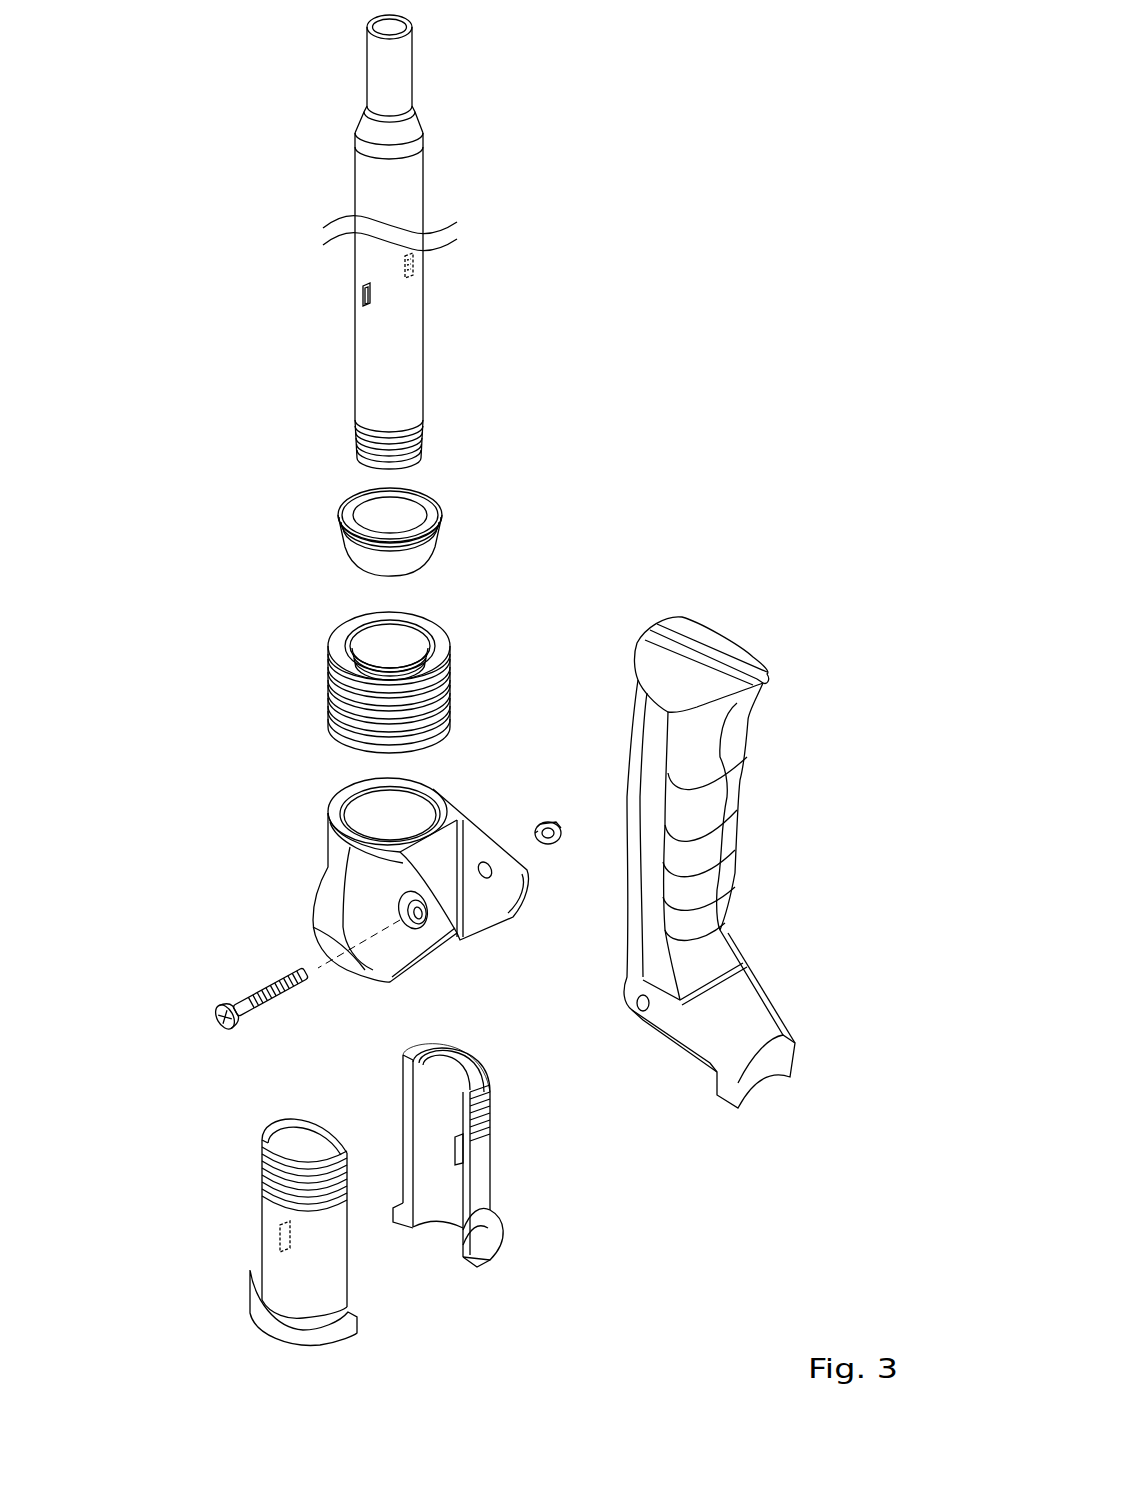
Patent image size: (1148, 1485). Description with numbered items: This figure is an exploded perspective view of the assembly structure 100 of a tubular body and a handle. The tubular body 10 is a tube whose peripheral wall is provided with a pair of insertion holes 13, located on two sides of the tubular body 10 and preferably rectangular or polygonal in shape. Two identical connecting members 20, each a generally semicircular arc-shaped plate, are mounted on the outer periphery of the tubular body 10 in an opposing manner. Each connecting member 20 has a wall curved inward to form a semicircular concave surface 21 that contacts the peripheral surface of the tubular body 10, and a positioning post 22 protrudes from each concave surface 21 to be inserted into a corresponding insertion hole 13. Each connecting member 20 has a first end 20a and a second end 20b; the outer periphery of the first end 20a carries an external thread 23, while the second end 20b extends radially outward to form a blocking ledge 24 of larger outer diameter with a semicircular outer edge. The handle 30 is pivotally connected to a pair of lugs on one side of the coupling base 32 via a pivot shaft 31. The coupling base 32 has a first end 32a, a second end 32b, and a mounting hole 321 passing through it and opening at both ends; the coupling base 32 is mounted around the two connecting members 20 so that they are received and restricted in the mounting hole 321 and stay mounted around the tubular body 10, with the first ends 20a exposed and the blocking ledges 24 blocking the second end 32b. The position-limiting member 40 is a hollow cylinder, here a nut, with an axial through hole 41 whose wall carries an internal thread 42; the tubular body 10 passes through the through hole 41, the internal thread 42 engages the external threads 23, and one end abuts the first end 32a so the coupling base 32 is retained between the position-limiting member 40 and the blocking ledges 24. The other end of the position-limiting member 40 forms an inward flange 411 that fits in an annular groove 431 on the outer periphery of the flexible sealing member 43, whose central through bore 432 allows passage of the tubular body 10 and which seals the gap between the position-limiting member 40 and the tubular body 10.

The assembly structure 100 is at (670, 316).
The tubular body 10 is at (348, 179).
The insertion hole 13 is at (362, 296).
The connecting member 20 is at (365, 1154).
The first end 20a is at (278, 1125).
The second end 20b is at (487, 1208).
The concave surface 21 is at (297, 1147).
The positioning post 22 is at (458, 1143).
The external thread 23 is at (262, 1176).
The blocking ledge 24 is at (265, 1328).
The handle 30 is at (770, 736).
The pivot shaft 31 is at (245, 987).
The coupling base 32 is at (380, 842).
The first end 32a is at (359, 842).
The second end 32b is at (305, 957).
The mounting hole 321 is at (400, 833).
The position-limiting member 40 is at (356, 640).
The through hole 41 is at (388, 643).
The flange 411 is at (343, 650).
The internal thread 42 is at (421, 655).
The flexible sealing member 43 is at (377, 509).
The annular groove 431 is at (357, 559).
The through bore 432 is at (408, 520).